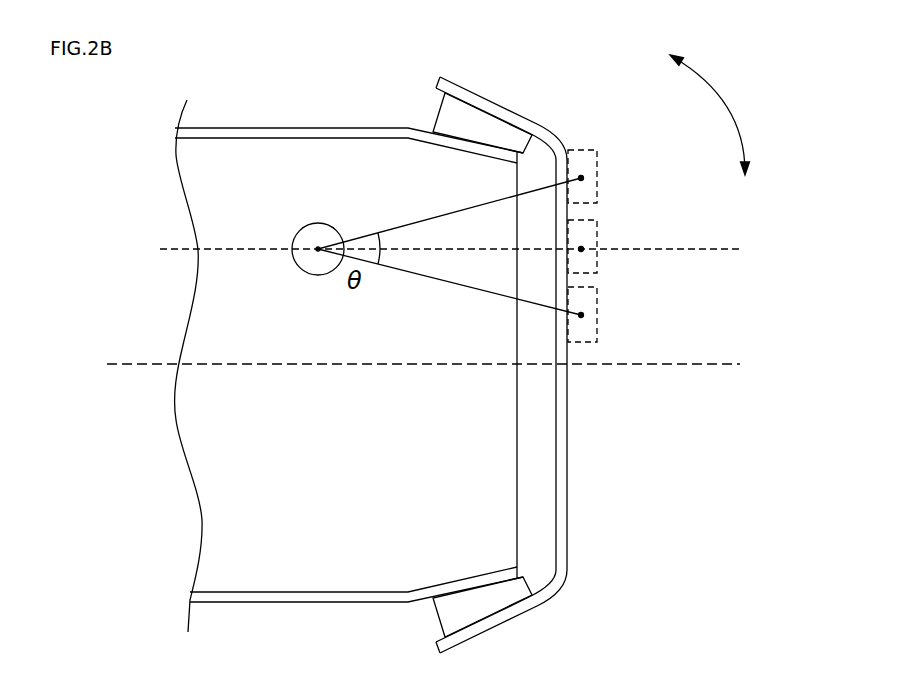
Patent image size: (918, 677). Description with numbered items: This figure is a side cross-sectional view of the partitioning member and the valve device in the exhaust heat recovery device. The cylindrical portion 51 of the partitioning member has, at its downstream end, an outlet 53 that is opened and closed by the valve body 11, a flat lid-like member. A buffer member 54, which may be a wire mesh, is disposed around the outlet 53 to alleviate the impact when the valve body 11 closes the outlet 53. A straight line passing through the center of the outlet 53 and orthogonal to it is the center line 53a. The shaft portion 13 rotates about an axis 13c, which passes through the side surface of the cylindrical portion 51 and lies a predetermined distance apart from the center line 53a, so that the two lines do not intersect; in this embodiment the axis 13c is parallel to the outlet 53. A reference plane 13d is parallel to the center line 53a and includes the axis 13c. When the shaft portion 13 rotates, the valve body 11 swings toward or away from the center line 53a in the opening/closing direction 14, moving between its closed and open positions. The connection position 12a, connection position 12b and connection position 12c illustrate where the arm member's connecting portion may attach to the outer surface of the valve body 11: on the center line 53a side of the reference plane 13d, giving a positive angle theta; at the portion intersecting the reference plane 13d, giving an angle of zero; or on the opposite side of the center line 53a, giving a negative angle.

The cylindrical portion 51 is at (279, 132).
The buffer member 54 is at (477, 125).
The outlet 53 is at (517, 432).
The center line 53a is at (348, 366).
The valve body 11 is at (562, 498).
The connection position 12a is at (597, 313).
The connection position 12b is at (597, 228).
The connection position 12c is at (597, 177).
The shaft portion 13 is at (303, 237).
The axis 13c is at (322, 223).
The reference plane 13d is at (167, 248).
The opening/closing direction 14 is at (717, 115).